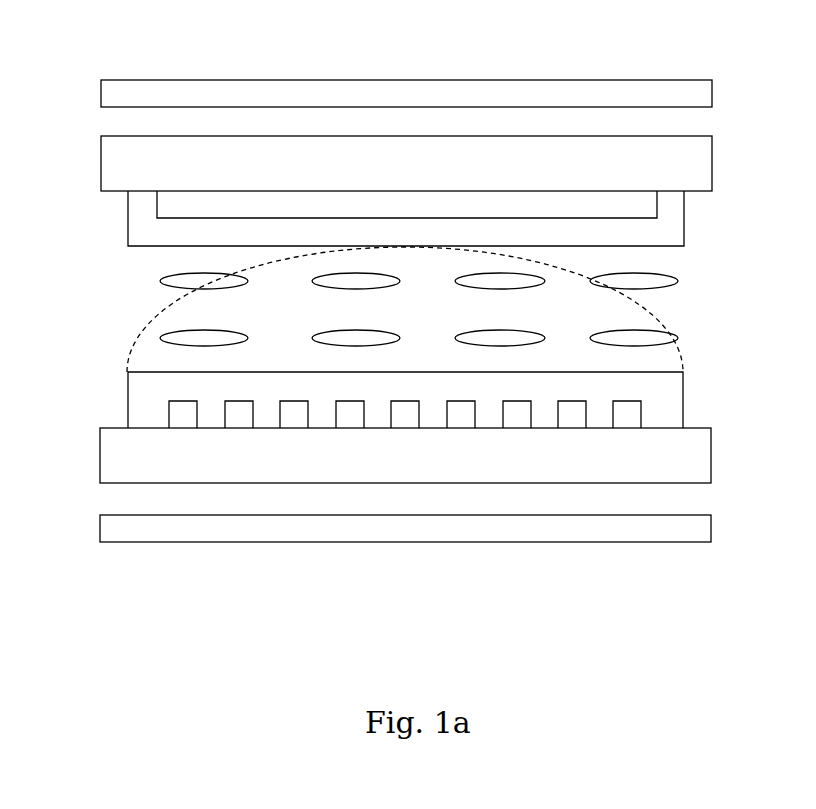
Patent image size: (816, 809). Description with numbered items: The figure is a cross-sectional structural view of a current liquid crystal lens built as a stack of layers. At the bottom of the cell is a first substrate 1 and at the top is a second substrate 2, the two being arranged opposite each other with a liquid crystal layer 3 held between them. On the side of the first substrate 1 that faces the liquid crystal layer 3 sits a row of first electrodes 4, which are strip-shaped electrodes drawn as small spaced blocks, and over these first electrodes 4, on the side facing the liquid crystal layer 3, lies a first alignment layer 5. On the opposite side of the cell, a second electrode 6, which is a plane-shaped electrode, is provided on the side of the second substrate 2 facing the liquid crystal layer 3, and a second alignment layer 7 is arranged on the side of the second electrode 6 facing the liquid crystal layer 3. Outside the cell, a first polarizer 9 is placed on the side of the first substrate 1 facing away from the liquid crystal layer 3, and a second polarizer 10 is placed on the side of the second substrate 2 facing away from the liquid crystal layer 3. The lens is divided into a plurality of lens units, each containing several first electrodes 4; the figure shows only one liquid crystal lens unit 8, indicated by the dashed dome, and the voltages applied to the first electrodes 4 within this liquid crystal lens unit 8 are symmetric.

The first substrate 1 is at (689, 456).
The second substrate 2 is at (690, 164).
The liquid crystal layer 3 is at (462, 309).
The first electrode 4 is at (361, 398).
The first alignment layer 5 is at (454, 386).
The second electrode 6 is at (358, 222).
The second alignment layer 7 is at (460, 234).
The liquid crystal lens unit 8 is at (160, 311).
The first polarizer 9 is at (433, 564).
The second polarizer 10 is at (415, 53).